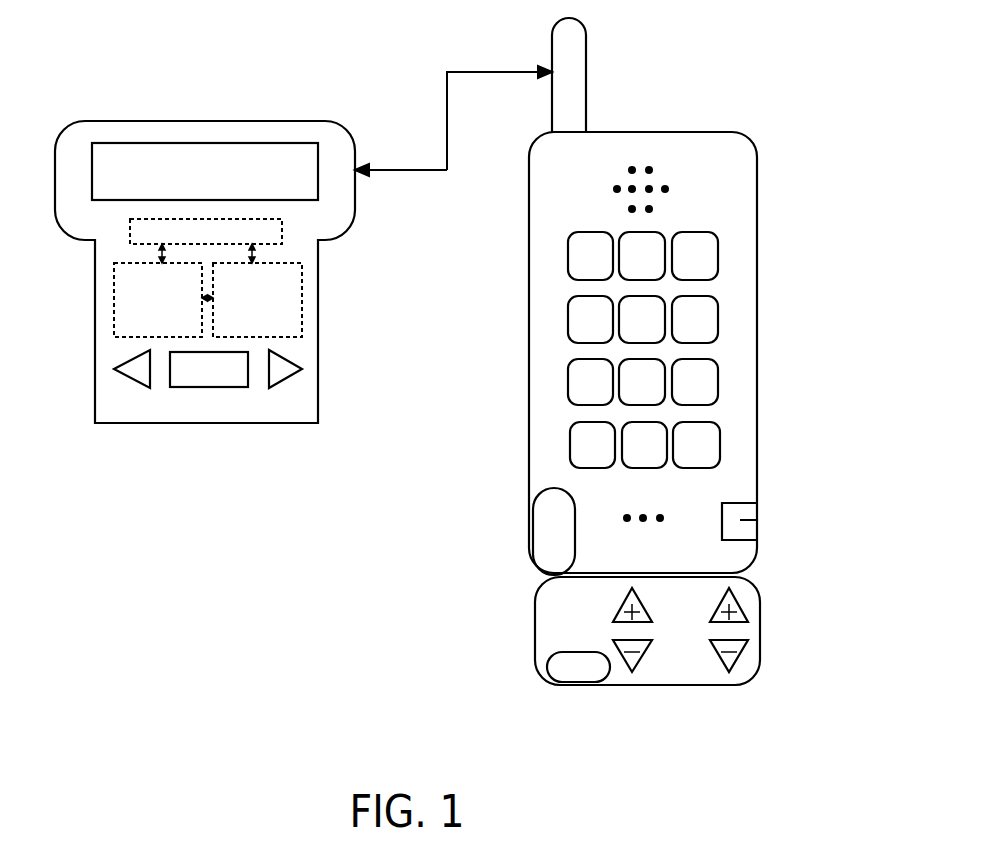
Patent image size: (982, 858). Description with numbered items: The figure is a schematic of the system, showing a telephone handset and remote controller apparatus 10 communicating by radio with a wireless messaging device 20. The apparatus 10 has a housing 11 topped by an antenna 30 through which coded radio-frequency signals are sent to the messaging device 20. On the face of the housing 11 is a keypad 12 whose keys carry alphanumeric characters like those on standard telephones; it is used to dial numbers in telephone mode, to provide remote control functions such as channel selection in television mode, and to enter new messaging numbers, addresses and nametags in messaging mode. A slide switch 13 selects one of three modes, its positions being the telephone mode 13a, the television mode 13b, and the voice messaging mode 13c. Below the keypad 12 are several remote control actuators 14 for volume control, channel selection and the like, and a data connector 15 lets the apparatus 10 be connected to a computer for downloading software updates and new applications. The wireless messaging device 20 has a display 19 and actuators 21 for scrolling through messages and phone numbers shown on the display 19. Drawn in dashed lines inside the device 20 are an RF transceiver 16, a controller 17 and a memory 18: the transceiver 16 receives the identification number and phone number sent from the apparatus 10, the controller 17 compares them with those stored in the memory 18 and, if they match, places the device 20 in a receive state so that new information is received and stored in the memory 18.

The telephone handset and remote controller apparatus 10 is at (708, 100).
The housing 11 is at (757, 298).
The keypad 12 is at (718, 237).
The slide switch 13 is at (533, 517).
The telephone mode position 13a is at (563, 503).
The television mode position 13b is at (566, 532).
The voice messaging mode position 13c is at (566, 560).
The remote control actuators 14 is at (577, 683).
The data connector 15 is at (757, 512).
The RF transceiver 16 is at (273, 308).
The controller 17 is at (267, 233).
The memory 18 is at (137, 285).
The display 19 is at (192, 172).
The wireless messaging device 20 is at (85, 403).
The actuators 21 is at (222, 377).
The antenna 30 is at (586, 42).